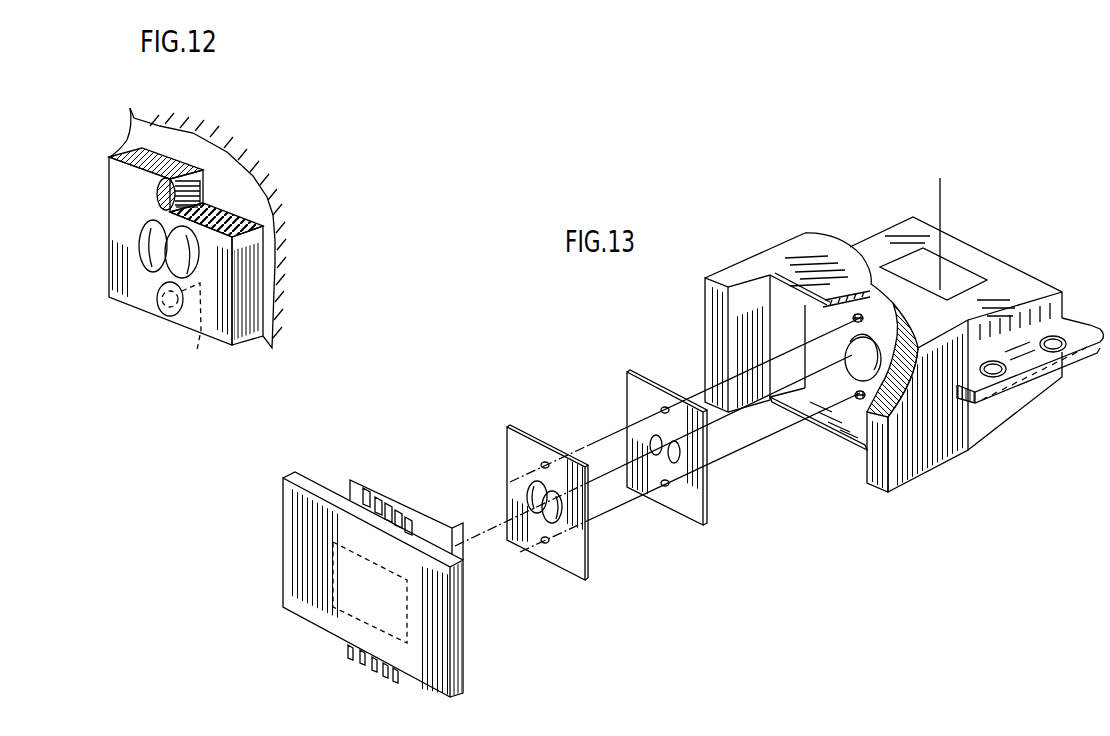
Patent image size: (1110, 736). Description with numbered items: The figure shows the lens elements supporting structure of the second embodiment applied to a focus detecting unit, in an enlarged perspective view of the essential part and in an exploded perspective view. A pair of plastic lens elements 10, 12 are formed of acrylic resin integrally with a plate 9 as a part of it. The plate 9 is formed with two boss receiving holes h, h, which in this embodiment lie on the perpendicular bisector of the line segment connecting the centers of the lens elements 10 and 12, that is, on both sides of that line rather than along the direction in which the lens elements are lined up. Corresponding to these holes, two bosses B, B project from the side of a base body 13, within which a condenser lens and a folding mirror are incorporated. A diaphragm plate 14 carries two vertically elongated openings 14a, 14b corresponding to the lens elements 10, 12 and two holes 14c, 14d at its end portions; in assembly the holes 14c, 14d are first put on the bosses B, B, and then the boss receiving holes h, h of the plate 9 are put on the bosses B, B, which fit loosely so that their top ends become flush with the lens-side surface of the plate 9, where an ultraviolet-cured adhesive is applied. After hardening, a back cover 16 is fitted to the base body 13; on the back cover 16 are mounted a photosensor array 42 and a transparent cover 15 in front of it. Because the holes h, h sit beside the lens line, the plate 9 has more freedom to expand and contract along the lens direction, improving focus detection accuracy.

In FIG. 12, the plate 9 is at (110, 212).
In FIG. 13, the plate 9 is at (560, 574).
In FIG. 12, the plastic lens element 10 is at (140, 257).
In FIG. 13, the plastic lens element 10 is at (527, 493).
In FIG. 12, the plastic lens element 12 is at (200, 255).
In FIG. 13, the plastic lens element 12 is at (558, 514).
In FIG. 12, the base body 13 is at (290, 303).
In FIG. 13, the base body 13 is at (958, 438).
In FIG. 13, the diaphragm plate 14 is at (704, 503).
In FIG. 13, the opening 14a is at (650, 445).
In FIG. 13, the opening 14b is at (678, 455).
In FIG. 13, the hole 14c is at (665, 407).
In FIG. 13, the hole 14d is at (667, 487).
In FIG. 13, the transparent cover 15 is at (403, 492).
In FIG. 13, the back cover 16 is at (427, 687).
In FIG. 13, the photosensor array 42 is at (350, 614).
In FIG. 12, the boss B is at (200, 193).
In FIG. 13, the boss B is at (852, 247).
In FIG. 12, the boss receiving hole h is at (200, 177).
In FIG. 13, the boss receiving hole h is at (544, 462).